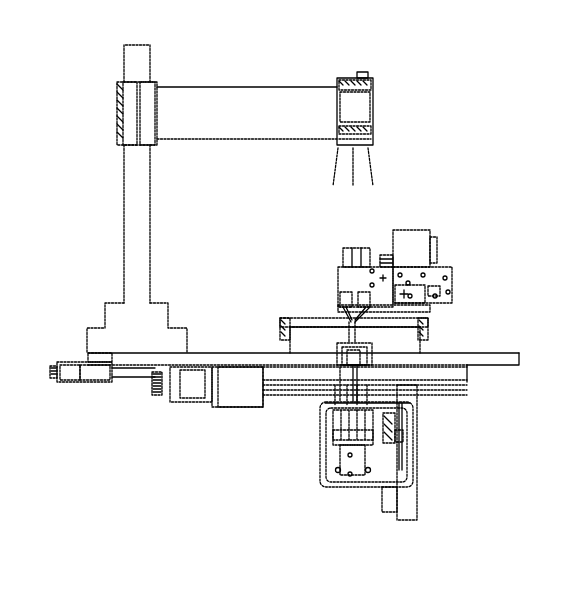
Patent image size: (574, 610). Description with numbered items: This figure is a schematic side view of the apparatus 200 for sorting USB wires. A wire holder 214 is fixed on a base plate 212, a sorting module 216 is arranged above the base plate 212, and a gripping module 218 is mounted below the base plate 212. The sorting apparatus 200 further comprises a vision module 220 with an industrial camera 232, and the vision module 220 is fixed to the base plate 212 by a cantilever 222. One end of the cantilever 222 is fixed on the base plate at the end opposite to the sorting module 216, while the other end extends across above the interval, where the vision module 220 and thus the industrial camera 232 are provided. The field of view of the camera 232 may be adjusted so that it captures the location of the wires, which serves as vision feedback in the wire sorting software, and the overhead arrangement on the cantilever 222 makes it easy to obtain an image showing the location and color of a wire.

The sorting apparatus 200 is at (93, 71).
The base plate 212 is at (473, 345).
The wire holder 214 is at (306, 313).
The sorting module 216 is at (454, 247).
The gripping module 218 is at (428, 446).
The vision module 220 is at (388, 81).
The cantilever 222 is at (118, 166).
The industrial camera 232 is at (362, 148).